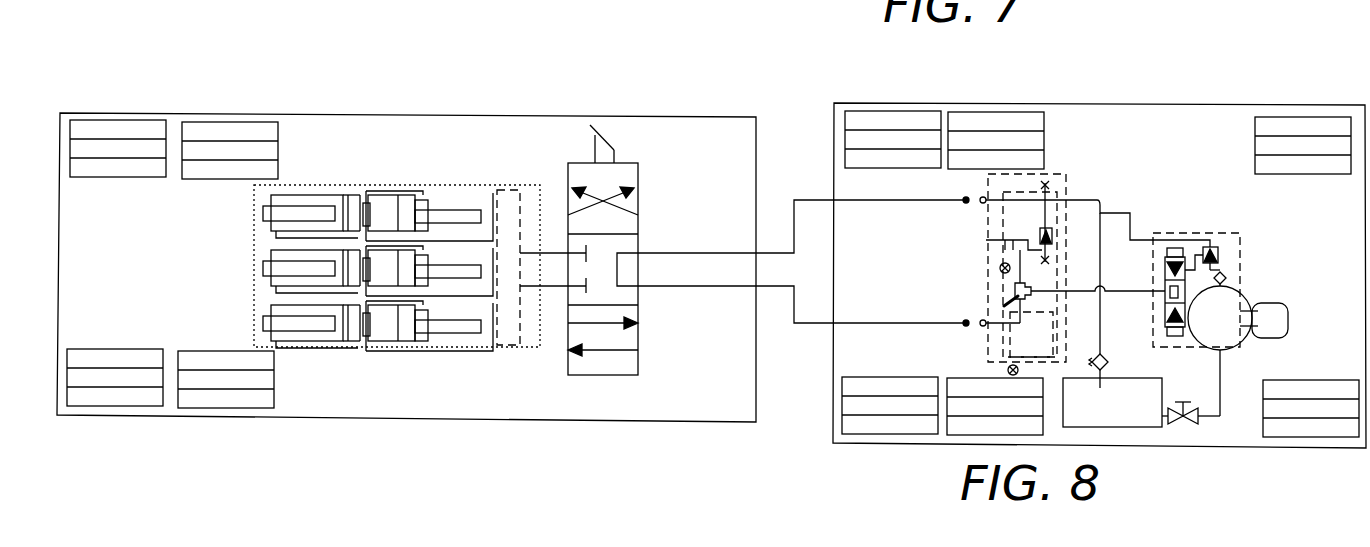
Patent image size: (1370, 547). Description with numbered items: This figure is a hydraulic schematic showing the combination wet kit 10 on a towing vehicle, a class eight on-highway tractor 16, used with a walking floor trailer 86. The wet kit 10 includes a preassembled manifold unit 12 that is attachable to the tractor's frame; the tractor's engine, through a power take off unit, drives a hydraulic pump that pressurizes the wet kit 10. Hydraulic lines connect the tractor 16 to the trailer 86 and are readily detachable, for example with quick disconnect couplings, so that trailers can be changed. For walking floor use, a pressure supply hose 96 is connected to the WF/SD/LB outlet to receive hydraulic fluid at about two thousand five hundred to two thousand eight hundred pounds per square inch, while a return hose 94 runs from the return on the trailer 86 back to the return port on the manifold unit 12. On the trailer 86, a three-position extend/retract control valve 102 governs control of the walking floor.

The wet kit 10 is at (1137, 229).
The manifold unit 12 is at (1068, 172).
The tractor 16 is at (1177, 108).
The walking floor trailer 86 is at (445, 120).
The return hose 94 is at (817, 198).
The pressure supply hose 96 is at (812, 325).
The three-position extend/retract control valve 102 is at (635, 173).